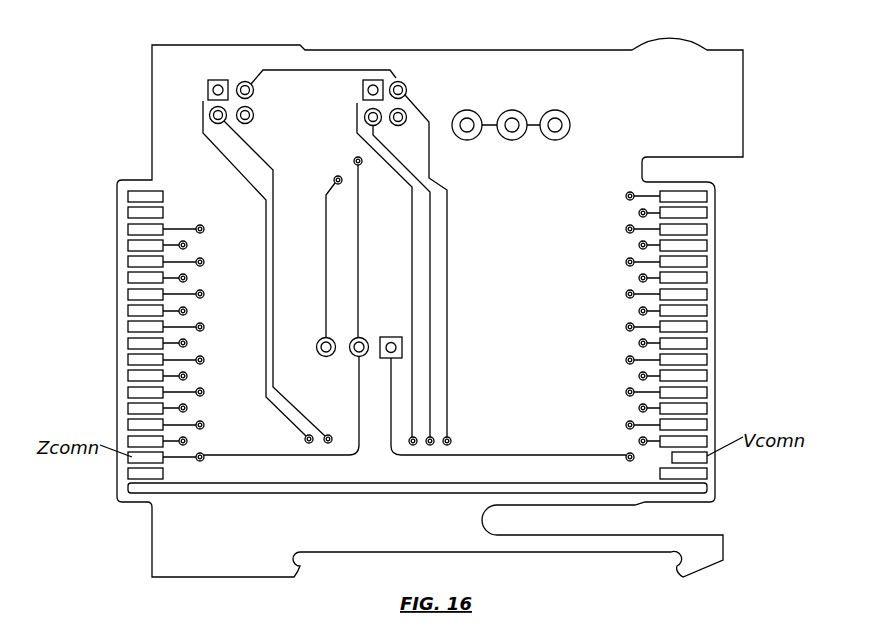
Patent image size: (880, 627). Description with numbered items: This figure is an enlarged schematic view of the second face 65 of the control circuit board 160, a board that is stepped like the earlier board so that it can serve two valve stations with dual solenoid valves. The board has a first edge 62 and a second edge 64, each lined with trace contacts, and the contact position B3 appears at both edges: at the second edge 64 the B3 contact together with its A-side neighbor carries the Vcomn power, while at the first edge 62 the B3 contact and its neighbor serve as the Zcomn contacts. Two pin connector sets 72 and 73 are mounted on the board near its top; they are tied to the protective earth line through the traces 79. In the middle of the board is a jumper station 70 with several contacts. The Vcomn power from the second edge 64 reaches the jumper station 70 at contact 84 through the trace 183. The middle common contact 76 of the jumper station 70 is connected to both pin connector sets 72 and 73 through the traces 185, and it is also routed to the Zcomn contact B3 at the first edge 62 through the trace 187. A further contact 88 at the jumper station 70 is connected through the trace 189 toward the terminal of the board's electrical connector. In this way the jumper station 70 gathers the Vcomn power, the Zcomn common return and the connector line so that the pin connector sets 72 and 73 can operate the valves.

The control circuit board 160 is at (488, 67).
The first edge 62 is at (120, 191).
The second edge 64 is at (718, 213).
The pin connector set 73 is at (230, 68).
The traces 79 is at (333, 67).
The pin connector set 72 is at (410, 78).
The trace 189 is at (323, 213).
The traces 185 is at (360, 250).
The contact 88 is at (318, 352).
The jumper station 70 is at (301, 358).
The middle common contact 76 is at (347, 353).
The contact 84 is at (388, 336).
The trace 187 is at (265, 455).
The trace 183 is at (512, 455).
The face 65 is at (534, 373).
The trace contact B3 is at (707, 459).